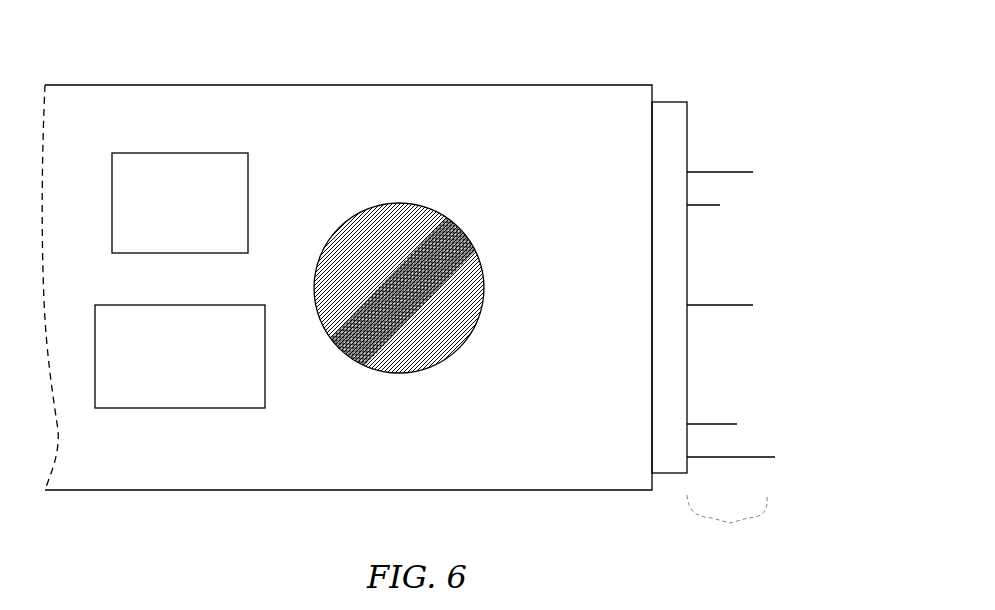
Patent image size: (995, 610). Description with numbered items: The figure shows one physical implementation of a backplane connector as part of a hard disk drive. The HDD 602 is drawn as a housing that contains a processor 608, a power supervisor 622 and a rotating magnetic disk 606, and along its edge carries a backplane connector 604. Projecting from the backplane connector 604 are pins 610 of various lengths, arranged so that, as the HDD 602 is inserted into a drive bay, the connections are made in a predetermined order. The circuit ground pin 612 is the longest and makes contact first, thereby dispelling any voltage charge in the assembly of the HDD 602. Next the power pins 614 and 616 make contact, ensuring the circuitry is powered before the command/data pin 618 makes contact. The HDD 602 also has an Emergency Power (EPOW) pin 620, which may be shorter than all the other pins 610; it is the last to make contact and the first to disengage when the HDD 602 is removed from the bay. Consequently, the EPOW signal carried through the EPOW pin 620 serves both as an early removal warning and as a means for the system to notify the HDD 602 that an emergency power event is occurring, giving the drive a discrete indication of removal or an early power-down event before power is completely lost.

The hard disk drive 602 is at (633, 85).
The backplane connector 604 is at (678, 102).
The rotating magnetic disk 606 is at (475, 250).
The processor 608 is at (247, 157).
The pins 610 is at (727, 528).
The circuit ground pin 612 is at (775, 455).
The power pin 614 is at (777, 168).
The power pin 616 is at (777, 301).
The command/data pin 618 is at (777, 420).
The Emergency Power (EPOW) pin 620 is at (777, 201).
The power supervisor 622 is at (265, 388).